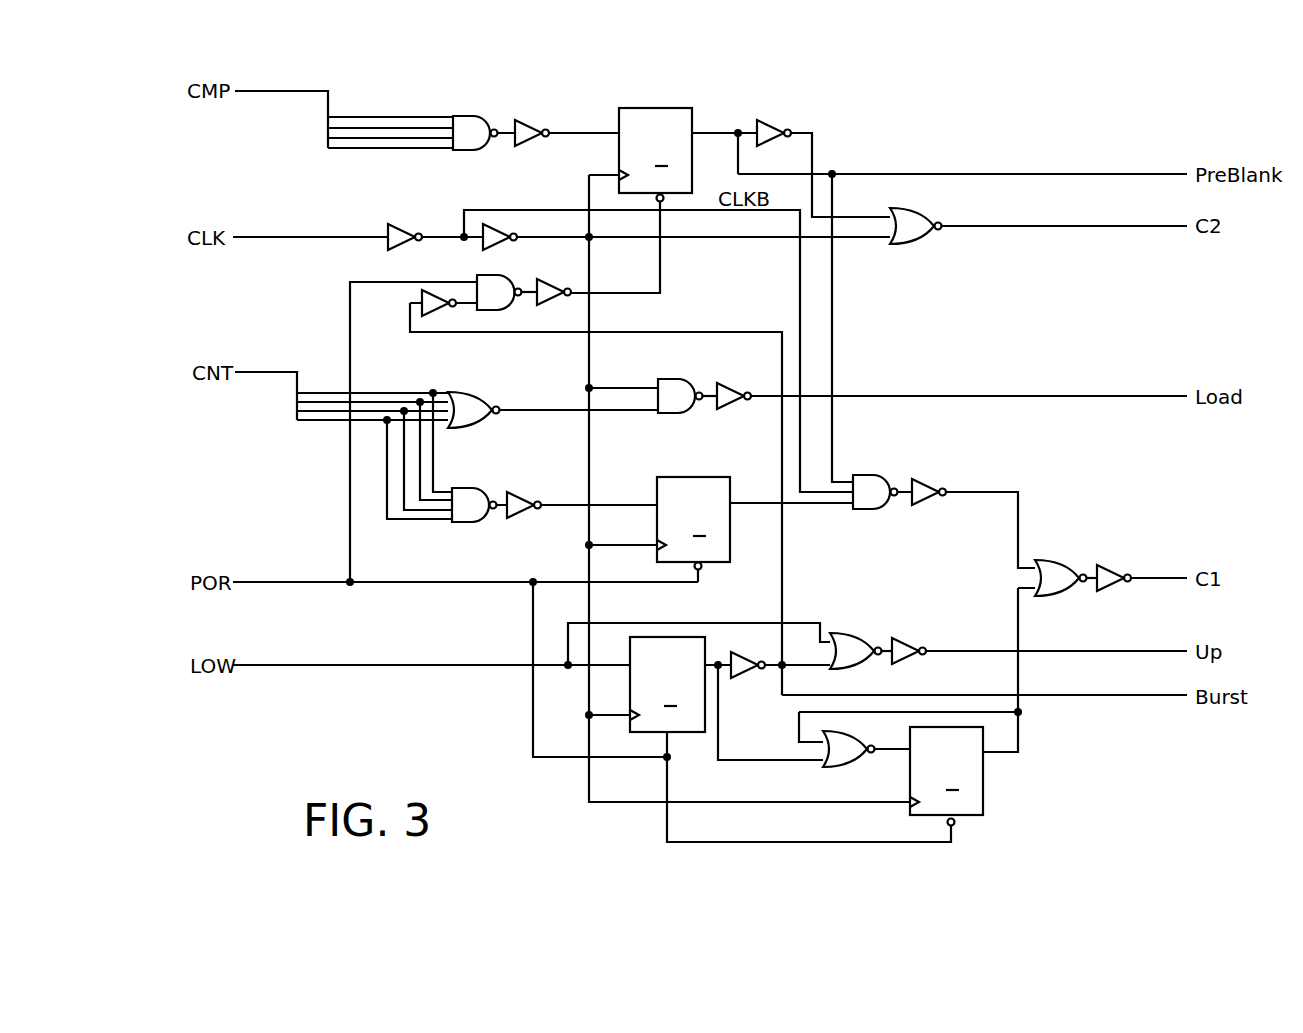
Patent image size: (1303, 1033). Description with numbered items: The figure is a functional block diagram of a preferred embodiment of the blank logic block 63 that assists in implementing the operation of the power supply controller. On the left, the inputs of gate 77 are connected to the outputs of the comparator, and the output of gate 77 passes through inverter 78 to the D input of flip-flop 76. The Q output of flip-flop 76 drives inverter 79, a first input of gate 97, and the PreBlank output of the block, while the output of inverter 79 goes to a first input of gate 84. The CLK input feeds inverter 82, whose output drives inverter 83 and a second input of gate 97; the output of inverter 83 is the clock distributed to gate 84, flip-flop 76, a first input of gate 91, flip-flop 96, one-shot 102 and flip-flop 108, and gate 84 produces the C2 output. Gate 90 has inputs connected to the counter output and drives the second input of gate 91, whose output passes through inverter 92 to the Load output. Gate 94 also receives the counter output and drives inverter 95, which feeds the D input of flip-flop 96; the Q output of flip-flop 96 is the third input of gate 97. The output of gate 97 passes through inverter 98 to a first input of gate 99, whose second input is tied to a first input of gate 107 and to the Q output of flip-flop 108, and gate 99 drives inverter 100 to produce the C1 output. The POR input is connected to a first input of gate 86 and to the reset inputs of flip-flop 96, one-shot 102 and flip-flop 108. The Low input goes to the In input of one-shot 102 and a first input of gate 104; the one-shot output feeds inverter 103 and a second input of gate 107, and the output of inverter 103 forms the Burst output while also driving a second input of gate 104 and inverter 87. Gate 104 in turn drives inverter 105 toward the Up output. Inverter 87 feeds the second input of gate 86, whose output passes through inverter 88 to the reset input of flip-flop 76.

The blank logic block 63 is at (462, 743).
The flip-flop 76 is at (633, 107).
The gate 77 is at (471, 116).
The inverter 78 is at (523, 120).
The inverter 79 is at (768, 118).
The inverter 82 is at (388, 228).
The inverter 83 is at (498, 222).
The gate 84 is at (915, 246).
The gate 86 is at (482, 311).
The inverter 87 is at (419, 317).
The inverter 88 is at (545, 279).
The gate 90 is at (482, 393).
The gate 91 is at (678, 378).
The inverter 92 is at (730, 379).
The gate 94 is at (470, 487).
The inverter 95 is at (527, 497).
The flip-flop 96 is at (712, 477).
The gate 97 is at (876, 510).
The inverter 98 is at (928, 503).
The gate 99 is at (1058, 560).
The inverter 100 is at (1113, 565).
The one-shot 102 is at (685, 637).
The inverter 103 is at (748, 678).
The gate 104 is at (868, 635).
The inverter 105 is at (916, 638).
The gate 107 is at (840, 767).
The flip-flop 108 is at (970, 818).